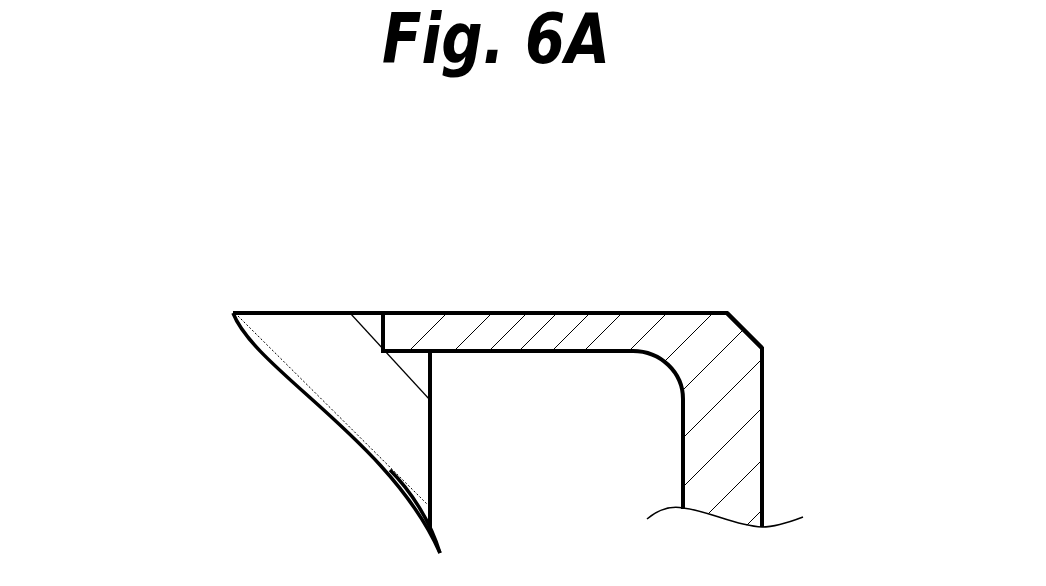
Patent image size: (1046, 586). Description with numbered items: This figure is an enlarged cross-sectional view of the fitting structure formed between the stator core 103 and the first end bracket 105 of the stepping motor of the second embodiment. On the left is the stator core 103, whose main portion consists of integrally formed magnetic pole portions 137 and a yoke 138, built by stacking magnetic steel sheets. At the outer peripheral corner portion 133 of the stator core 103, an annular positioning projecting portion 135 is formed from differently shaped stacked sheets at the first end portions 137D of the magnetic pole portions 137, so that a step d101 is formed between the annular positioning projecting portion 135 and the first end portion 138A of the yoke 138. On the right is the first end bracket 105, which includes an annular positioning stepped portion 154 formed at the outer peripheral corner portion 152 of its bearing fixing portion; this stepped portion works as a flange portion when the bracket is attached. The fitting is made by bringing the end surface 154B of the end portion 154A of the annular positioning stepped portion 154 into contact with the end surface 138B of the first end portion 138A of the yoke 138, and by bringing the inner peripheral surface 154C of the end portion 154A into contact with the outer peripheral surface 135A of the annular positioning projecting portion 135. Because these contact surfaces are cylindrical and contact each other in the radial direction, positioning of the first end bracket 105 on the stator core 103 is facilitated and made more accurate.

The stator core 103 is at (260, 312).
The first end bracket 105 is at (765, 432).
The outer peripheral corner portion 133 is at (382, 352).
The annular positioning projecting portion 135 is at (415, 478).
The outer peripheral surface 135A is at (418, 352).
The magnetic pole portions 137 is at (308, 377).
The first end portions 137D is at (388, 443).
The yoke 138 is at (293, 312).
The first end portion 138A is at (368, 312).
The end surface 138B is at (400, 351).
The outer peripheral corner portion 152 is at (748, 335).
The annular positioning stepped portion 154 is at (547, 312).
The end portion 154A is at (423, 313).
The end surface 154B is at (353, 316).
The inner peripheral surface 154C is at (419, 355).
The step d101 is at (395, 313).